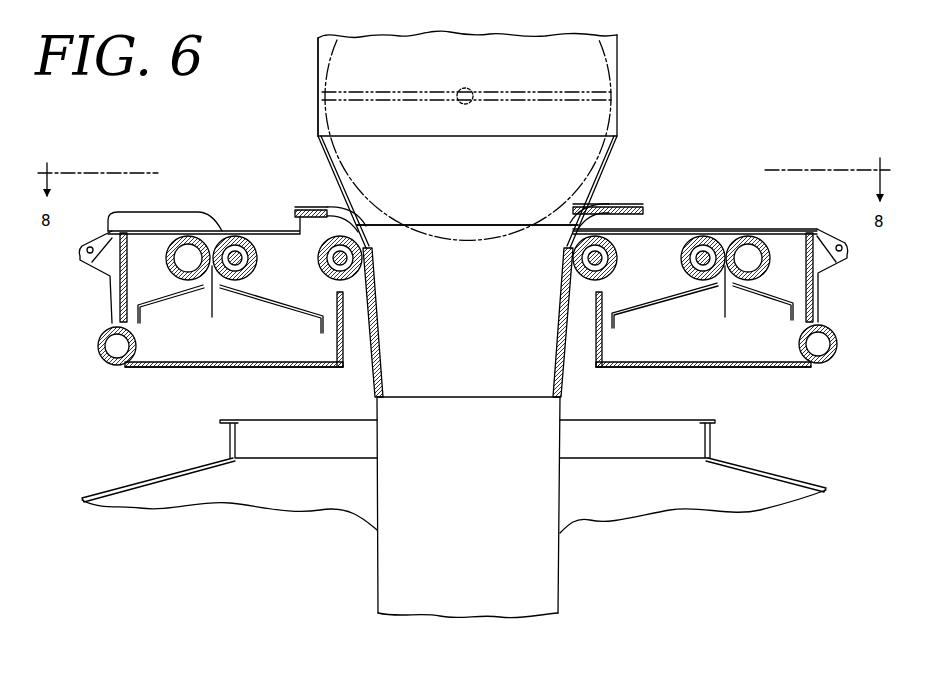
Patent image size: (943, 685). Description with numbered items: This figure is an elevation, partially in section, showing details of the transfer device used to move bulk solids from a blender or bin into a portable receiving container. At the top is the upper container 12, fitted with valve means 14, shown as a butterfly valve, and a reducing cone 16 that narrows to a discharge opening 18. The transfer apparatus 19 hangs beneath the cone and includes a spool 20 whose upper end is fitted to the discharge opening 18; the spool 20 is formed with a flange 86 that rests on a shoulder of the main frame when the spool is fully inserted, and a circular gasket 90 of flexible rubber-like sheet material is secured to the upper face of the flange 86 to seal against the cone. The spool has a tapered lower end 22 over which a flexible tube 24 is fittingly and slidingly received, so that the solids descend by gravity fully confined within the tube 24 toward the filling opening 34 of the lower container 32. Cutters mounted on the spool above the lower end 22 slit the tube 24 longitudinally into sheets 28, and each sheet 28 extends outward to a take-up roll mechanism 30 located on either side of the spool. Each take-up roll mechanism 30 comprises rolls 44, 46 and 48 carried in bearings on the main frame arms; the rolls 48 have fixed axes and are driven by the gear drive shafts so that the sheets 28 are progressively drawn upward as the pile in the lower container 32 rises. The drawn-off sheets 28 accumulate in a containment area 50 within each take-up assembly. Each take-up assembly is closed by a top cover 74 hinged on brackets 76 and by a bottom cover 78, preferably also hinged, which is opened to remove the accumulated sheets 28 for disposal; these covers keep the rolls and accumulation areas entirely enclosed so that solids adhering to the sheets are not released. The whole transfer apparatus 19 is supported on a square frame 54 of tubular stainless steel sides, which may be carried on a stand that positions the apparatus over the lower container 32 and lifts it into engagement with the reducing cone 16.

The upper container 12 is at (618, 68).
The valve means 14 is at (318, 70).
The reducing cone 16 is at (607, 158).
The discharge opening 18 is at (470, 227).
The transfer apparatus 19 is at (104, 298).
The spool 20 is at (562, 265).
The tapered lower end 22 is at (490, 400).
The flexible tube 24 is at (560, 577).
The sheets 28 is at (270, 231).
The take-up roll mechanisms 30 is at (280, 276).
The lower container 32 is at (762, 470).
The filling opening 34 is at (240, 432).
The roll 44 is at (320, 262).
The roll 46 is at (248, 277).
The roll 48 is at (178, 277).
The containment area 50 is at (248, 345).
The square frame 54 is at (108, 359).
The top cover 74 is at (752, 231).
The brackets 76 is at (843, 262).
The bottom cover 78 is at (207, 368).
The flange 86 is at (302, 207).
The circular gasket 90 is at (593, 192).